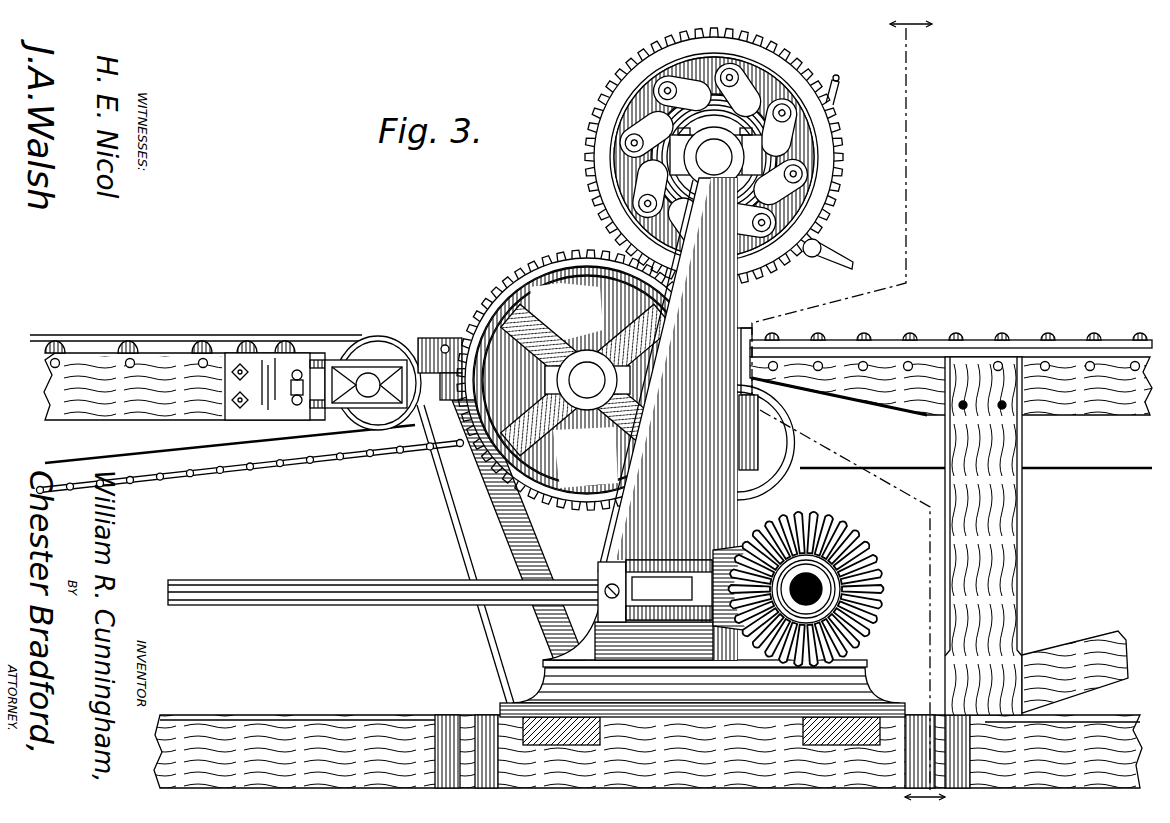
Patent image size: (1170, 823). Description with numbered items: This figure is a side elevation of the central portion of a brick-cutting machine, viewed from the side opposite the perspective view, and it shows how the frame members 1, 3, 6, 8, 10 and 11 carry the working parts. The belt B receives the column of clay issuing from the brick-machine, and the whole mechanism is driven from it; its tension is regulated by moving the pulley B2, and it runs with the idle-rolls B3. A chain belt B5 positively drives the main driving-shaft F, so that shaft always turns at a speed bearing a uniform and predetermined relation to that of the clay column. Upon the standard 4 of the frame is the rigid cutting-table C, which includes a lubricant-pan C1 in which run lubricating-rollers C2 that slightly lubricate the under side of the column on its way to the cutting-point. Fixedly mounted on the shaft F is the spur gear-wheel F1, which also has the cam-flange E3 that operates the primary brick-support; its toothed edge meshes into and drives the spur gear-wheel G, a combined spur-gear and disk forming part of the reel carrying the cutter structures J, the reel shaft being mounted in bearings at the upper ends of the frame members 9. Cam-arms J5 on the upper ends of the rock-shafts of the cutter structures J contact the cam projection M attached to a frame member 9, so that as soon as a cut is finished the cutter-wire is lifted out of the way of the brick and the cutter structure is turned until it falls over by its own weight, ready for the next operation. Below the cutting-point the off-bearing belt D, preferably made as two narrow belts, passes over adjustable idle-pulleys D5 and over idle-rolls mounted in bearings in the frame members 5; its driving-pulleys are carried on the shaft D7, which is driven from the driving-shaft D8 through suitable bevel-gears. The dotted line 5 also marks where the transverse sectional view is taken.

The frame member 1 is at (300, 714).
The frame member 3 is at (83, 414).
The standard 4 is at (490, 510).
The frame member 5 is at (1092, 422).
The frame member 6 is at (797, 447).
The frame member 8 is at (765, 418).
The frame member 9 is at (738, 311).
The frame member 10 is at (443, 508).
The frame member 11 is at (1018, 598).
The belt B is at (178, 343).
The pulley B2 is at (372, 345).
The idle-rolls B3 is at (292, 350).
The chain belt B5 is at (213, 478).
The cutting-table C is at (607, 342).
The lubricant-pan C1 is at (422, 345).
The lubricating-rollers C2 is at (447, 342).
The off-bearing belt D is at (823, 340).
The adjustable idle-pulleys D5 is at (793, 505).
The shaft D7 is at (877, 557).
The driving-shaft D8 is at (268, 600).
The cam-flange E3 is at (570, 285).
The main driving-shaft F is at (587, 427).
The spur gear-wheel F1 is at (517, 272).
The combined spur-gear and disk G is at (625, 70).
The cutter structures J is at (733, 72).
The cam-arms J5 is at (845, 213).
The cam projection M is at (775, 152).